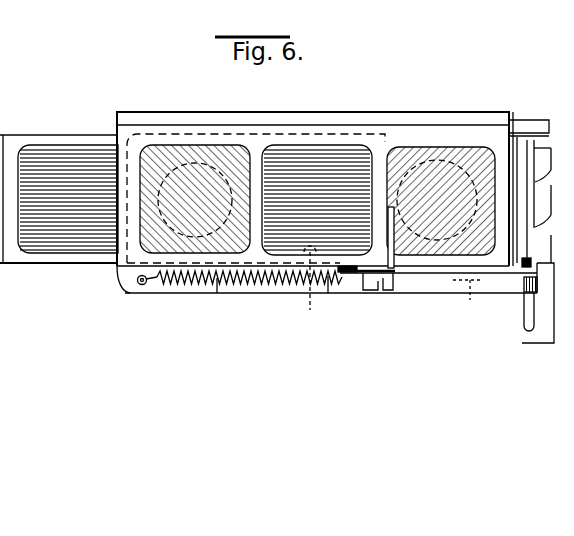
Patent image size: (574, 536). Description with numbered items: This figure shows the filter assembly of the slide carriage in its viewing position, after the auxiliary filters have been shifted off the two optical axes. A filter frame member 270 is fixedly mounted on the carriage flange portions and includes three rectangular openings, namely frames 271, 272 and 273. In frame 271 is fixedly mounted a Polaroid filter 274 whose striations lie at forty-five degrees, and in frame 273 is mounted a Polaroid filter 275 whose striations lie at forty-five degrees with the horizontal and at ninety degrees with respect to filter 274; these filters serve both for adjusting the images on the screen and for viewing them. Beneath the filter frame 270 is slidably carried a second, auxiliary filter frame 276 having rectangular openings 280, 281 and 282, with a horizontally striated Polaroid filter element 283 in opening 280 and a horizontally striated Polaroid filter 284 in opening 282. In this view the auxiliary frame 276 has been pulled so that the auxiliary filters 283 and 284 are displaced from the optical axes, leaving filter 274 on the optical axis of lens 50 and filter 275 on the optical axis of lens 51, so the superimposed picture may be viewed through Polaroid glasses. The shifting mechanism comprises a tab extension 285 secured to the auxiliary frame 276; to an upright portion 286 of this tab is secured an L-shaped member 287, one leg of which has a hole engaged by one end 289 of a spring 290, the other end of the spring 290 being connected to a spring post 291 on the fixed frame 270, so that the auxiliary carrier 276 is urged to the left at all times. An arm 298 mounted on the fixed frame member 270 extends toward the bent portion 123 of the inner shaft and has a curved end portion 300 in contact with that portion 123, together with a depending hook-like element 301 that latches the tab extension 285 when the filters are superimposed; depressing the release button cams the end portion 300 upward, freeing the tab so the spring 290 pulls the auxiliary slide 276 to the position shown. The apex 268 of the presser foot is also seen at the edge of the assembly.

The lens 50 is at (214, 162).
The lens 51 is at (416, 140).
The bent portion of inner shaft 123 is at (523, 319).
The apex of presser foot 268 is at (526, 142).
The filter frame member 270 is at (375, 110).
The frame 271 is at (435, 148).
The frame 272 is at (292, 146).
The frame 273 is at (162, 147).
The Polaroid filter 274 is at (455, 148).
The Polaroid filter 275 is at (190, 166).
The auxiliary filter frame 276 is at (17, 130).
The rectangular opening 280 is at (50, 148).
The rectangular opening 281 is at (184, 287).
The rectangular opening 282 is at (311, 289).
The Polaroid filter element 283 is at (77, 230).
The Polaroid filter 284 is at (283, 238).
The tab extension 285 is at (375, 290).
The upright portion 286 is at (367, 275).
The L-shaped member 287 is at (392, 274).
The end of spring 289 is at (357, 274).
The spring 290 is at (217, 296).
The spring post 291 is at (138, 284).
The arm 298 is at (438, 298).
The curved end portion 300 is at (523, 284).
The hook-like element 301 is at (469, 302).